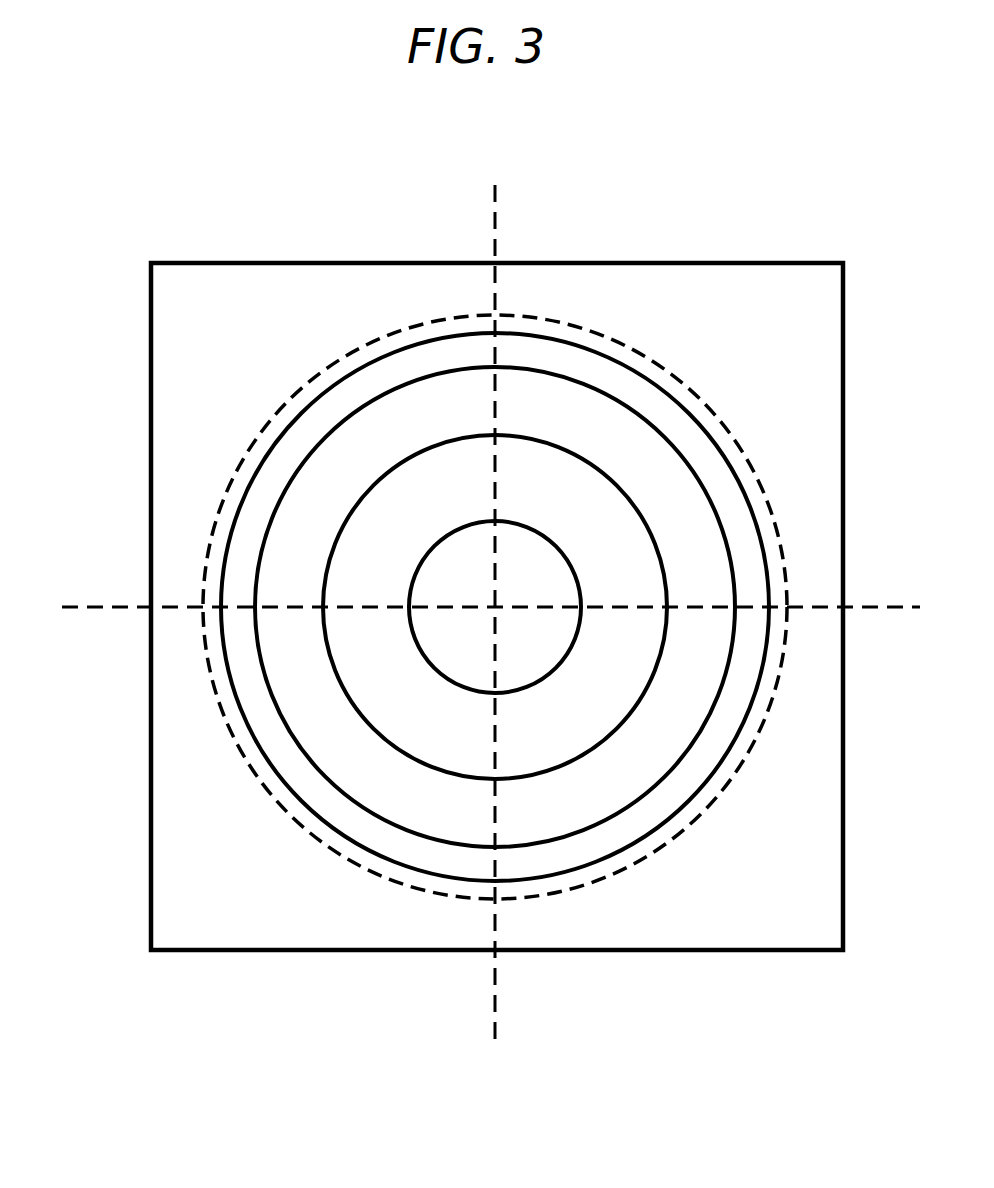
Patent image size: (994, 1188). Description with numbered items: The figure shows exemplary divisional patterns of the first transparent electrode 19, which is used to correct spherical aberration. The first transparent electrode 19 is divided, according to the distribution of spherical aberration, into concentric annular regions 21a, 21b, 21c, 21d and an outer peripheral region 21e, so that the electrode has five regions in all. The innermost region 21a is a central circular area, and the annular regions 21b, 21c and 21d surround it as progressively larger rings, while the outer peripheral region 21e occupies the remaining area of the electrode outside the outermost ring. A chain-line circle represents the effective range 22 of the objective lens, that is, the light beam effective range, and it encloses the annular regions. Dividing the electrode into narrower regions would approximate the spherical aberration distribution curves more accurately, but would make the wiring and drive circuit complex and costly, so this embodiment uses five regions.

The first transparent electrode 19 is at (775, 262).
The effective range 22 is at (522, 316).
The concentric annular region 21a is at (462, 563).
The concentric annular region 21b is at (370, 555).
The concentric annular region 21c is at (290, 562).
The concentric annular region 21d is at (240, 648).
The outer peripheral region 21e is at (170, 737).